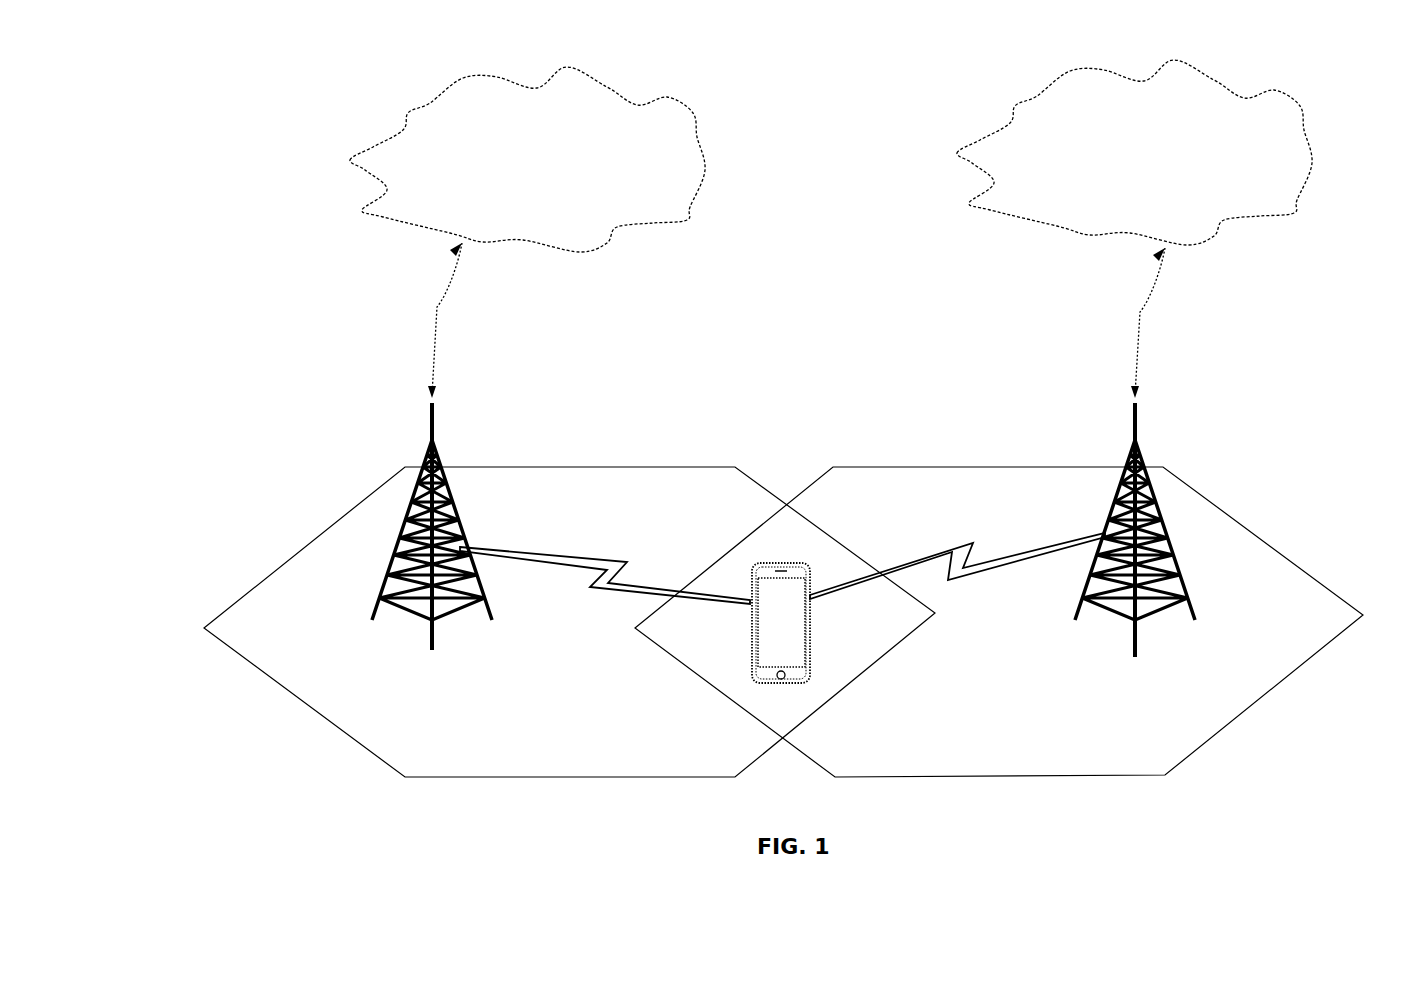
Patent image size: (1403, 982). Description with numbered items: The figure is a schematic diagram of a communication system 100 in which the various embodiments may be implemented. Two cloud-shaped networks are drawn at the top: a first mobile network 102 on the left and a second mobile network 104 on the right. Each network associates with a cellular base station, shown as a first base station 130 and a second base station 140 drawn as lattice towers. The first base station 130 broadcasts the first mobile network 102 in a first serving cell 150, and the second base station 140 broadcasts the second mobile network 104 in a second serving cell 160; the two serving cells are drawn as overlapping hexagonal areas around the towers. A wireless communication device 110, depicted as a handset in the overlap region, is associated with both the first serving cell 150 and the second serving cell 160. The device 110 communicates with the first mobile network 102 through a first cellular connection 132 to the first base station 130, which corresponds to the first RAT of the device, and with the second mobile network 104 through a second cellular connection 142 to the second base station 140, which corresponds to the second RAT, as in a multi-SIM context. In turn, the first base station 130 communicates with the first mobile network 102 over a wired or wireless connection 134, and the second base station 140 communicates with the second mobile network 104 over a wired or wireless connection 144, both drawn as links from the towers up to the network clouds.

The communication system 100 is at (833, 148).
The first mobile network 102 is at (420, 103).
The second mobile network 104 is at (1103, 73).
The wireless communication device 110 is at (812, 606).
The first base station 130 is at (392, 578).
The first cellular connection 132 is at (630, 590).
The wired or wireless connection 134 is at (436, 306).
The second base station 140 is at (1180, 575).
The second cellular connection 142 is at (955, 543).
The wired or wireless connection 144 is at (1139, 311).
The first serving cell 150 is at (620, 466).
The second serving cell 160 is at (975, 466).